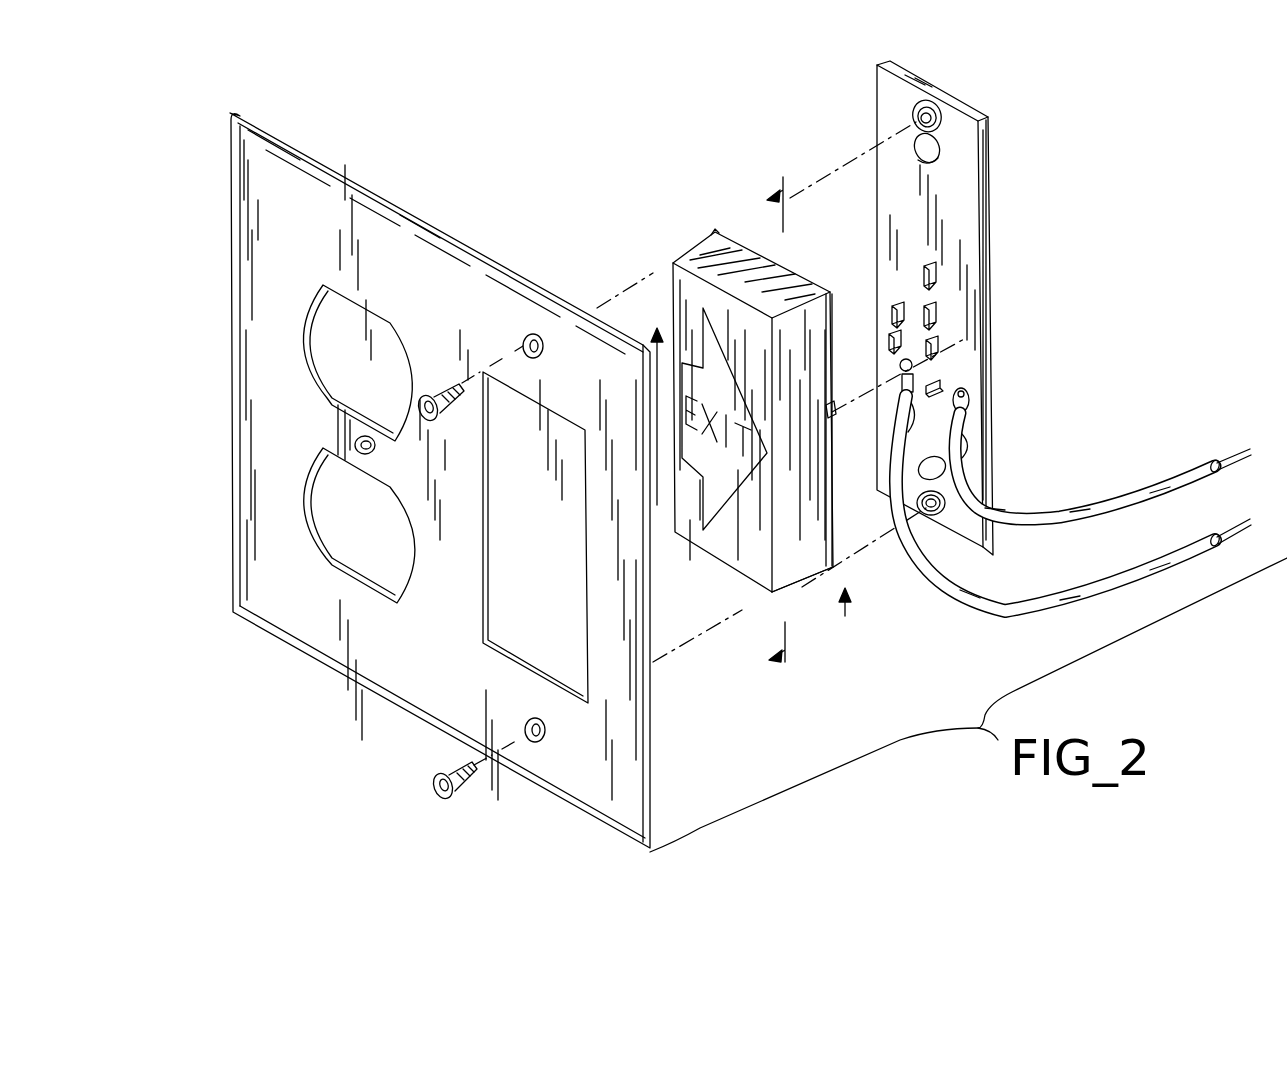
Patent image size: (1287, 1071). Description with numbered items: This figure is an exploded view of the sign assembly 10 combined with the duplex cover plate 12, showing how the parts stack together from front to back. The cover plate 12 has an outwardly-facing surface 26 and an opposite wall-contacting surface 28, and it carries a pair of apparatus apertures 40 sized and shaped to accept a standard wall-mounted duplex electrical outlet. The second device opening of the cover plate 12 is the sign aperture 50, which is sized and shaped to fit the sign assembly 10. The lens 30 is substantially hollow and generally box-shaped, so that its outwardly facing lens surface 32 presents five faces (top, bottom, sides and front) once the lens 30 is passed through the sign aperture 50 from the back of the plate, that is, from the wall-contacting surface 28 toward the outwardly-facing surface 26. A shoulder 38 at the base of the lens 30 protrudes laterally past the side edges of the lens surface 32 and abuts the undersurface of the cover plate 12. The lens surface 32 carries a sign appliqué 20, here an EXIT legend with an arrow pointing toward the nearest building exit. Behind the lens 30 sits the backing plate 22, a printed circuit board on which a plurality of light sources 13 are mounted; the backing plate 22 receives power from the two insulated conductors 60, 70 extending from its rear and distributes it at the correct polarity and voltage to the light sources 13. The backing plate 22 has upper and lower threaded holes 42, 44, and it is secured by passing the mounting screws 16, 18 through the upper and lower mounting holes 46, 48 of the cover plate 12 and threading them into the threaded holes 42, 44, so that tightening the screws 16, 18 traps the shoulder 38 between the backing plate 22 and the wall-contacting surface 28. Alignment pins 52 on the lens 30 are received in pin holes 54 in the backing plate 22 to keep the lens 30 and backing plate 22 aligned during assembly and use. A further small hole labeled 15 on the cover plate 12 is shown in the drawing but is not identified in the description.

The sign assembly 10 is at (591, 118).
The duplex cover plate 12 is at (311, 154).
The light sources 13 is at (950, 345).
The mounting screw hole 15 is at (357, 442).
The mounting screw 16 is at (437, 382).
The mounting screw 18 is at (457, 790).
The sign appliqué 20 is at (717, 498).
The backing plate 22 is at (970, 153).
The outwardly-facing surface 26 is at (358, 230).
The wall-contacting surface 28 is at (425, 220).
The lens 30 is at (688, 254).
The outwardly facing lens surface 32 is at (735, 542).
The shoulder 38 is at (716, 230).
The apparatus apertures 40 is at (338, 343).
The upper threaded hole 42 is at (916, 113).
The lower threaded hole 44 is at (927, 503).
The upper mounting hole 46 is at (516, 346).
The lower mounting hole 48 is at (537, 739).
The sign aperture 50 is at (523, 578).
The alignment pins 52 is at (833, 410).
The pin holes 54 is at (880, 278).
The insulated conductor 60 is at (1136, 575).
The insulated conductor 70 is at (1178, 480).